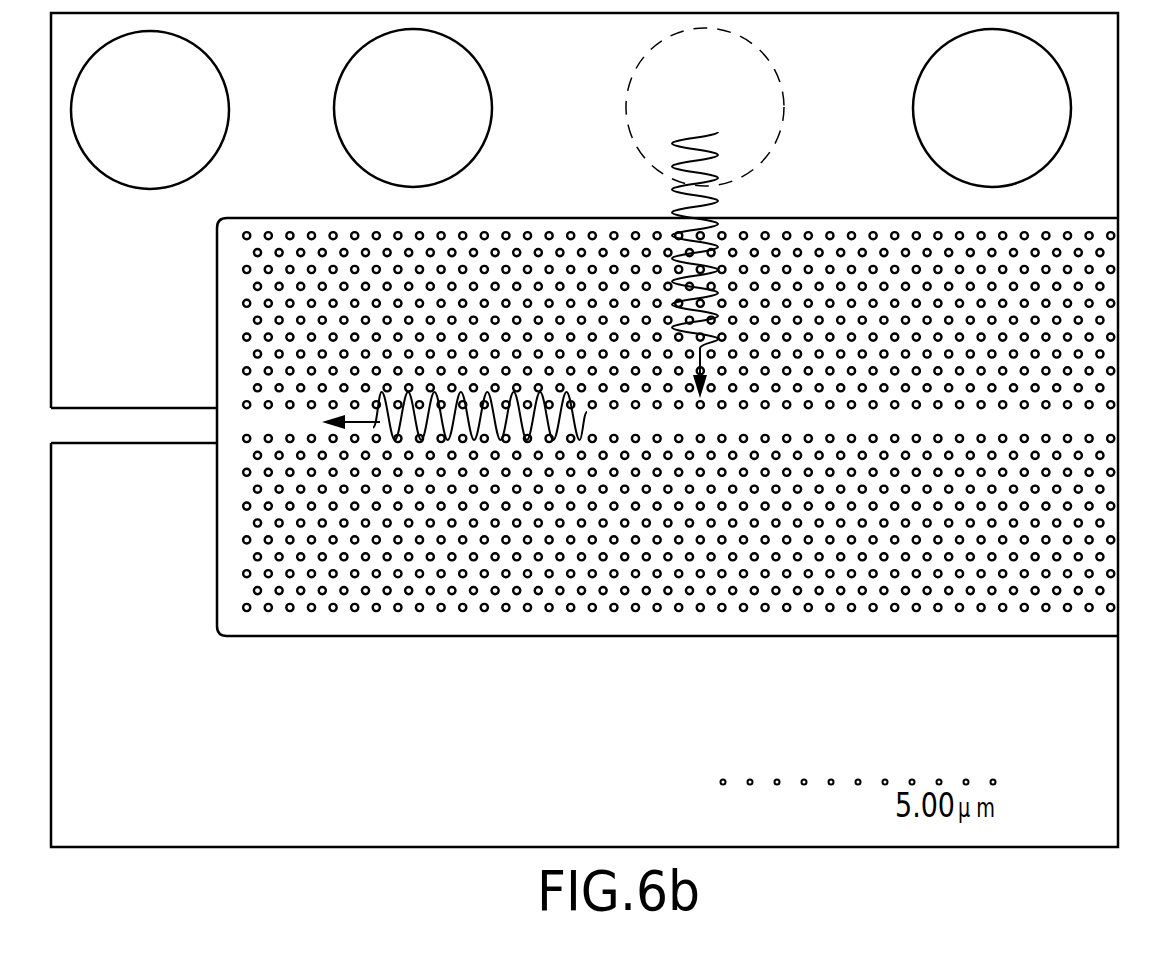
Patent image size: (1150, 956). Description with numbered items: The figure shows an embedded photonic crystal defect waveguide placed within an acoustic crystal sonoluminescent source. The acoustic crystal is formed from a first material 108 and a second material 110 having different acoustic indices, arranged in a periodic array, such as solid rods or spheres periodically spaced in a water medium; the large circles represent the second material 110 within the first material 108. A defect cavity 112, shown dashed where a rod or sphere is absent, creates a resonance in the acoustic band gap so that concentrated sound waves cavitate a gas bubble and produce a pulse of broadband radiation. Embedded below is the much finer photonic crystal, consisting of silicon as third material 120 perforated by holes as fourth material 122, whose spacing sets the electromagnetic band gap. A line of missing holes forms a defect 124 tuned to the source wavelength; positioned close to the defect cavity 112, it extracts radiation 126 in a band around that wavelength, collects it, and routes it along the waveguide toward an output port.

The first material 108 is at (285, 743).
The second material 110 is at (348, 81).
The defect cavity 112 is at (786, 78).
The third material 120 is at (217, 313).
The fourth material 122 is at (265, 365).
The defect 124 is at (790, 420).
The radiation 126 is at (708, 268).